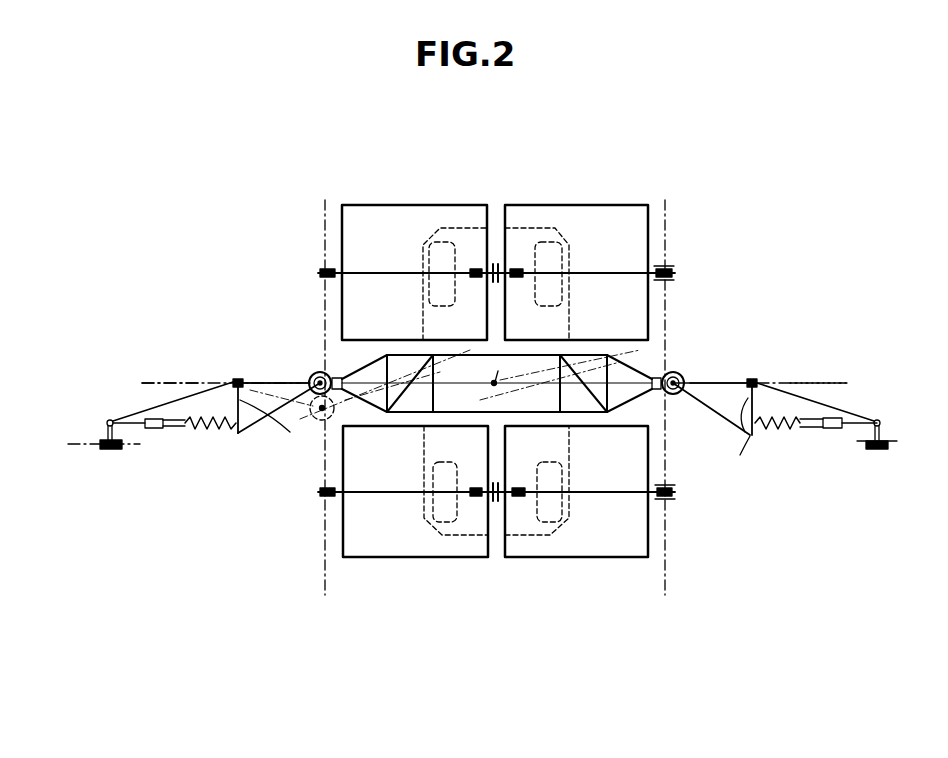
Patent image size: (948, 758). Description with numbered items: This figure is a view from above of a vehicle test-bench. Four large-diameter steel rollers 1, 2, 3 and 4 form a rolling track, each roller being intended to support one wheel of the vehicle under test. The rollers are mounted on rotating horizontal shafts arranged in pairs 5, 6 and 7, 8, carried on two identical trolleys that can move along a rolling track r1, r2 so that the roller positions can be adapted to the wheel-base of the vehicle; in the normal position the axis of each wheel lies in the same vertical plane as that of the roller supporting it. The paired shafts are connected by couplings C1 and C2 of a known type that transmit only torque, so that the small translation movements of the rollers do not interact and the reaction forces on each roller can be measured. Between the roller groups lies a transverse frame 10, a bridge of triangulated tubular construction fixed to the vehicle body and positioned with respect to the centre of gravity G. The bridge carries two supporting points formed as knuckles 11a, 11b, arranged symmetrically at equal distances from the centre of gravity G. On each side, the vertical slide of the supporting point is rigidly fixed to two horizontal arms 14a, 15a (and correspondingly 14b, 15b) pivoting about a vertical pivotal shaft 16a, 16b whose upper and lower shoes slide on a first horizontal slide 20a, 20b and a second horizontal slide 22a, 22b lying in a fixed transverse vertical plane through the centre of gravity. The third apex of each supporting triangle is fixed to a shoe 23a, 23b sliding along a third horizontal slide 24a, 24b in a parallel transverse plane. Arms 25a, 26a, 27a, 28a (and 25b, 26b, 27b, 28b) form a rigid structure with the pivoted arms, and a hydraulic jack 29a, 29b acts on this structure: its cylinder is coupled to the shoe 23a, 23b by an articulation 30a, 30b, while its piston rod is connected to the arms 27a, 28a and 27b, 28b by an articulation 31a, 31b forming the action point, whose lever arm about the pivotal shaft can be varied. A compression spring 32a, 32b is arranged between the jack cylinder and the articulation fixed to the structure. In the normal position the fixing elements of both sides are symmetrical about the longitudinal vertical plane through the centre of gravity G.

The metal roller 1 is at (385, 557).
The metal roller 2 is at (587, 557).
The metal roller 3 is at (404, 213).
The metal roller 4 is at (575, 213).
The rotating horizontal shaft 5 is at (317, 494).
The rotating horizontal shaft 6 is at (673, 494).
The rotating horizontal shaft 7 is at (318, 273).
The rotating horizontal shaft 8 is at (674, 273).
The transverse frame 10 is at (640, 395).
The knuckle 11a is at (345, 365).
The knuckle 11b is at (680, 376).
The horizontal arm 14a is at (283, 382).
The horizontal arm 15a is at (269, 364).
The horizontal arm 14b is at (730, 382).
The horizontal arm 15b is at (723, 367).
The pivotal shaft 16a is at (236, 379).
The pivotal shaft 16b is at (752, 378).
The first horizontal slide 20a is at (152, 382).
The second horizontal slide 22a is at (159, 364).
The first horizontal slide 20b is at (835, 382).
The second horizontal slide 22b is at (823, 366).
The shoe 23a is at (102, 449).
The third horizontal slide 24a is at (118, 449).
The shoe 23b is at (885, 449).
The third horizontal slide 24b is at (875, 449).
The arm 25a is at (240, 433).
The arm 26a is at (279, 440).
The arm 25b is at (700, 410).
The arm 26b is at (711, 432).
The arm 27a is at (308, 416).
The arm 28a is at (283, 429).
The arm 27b is at (747, 435).
The arm 28b is at (746, 464).
The hydraulic jack 29a is at (155, 428).
The hydraulic jack 29b is at (825, 428).
The articulation 30a is at (105, 423).
The articulation 30b is at (882, 423).
The articulation 31a is at (208, 430).
The articulation 31b is at (764, 430).
The compression spring 32a is at (197, 430).
The compression spring 32b is at (803, 428).
The coupling C1 is at (497, 500).
The coupling C2 is at (496, 268).
The centre of gravity G is at (506, 370).
The rolling track r1 is at (325, 212).
The rolling track r2 is at (665, 212).